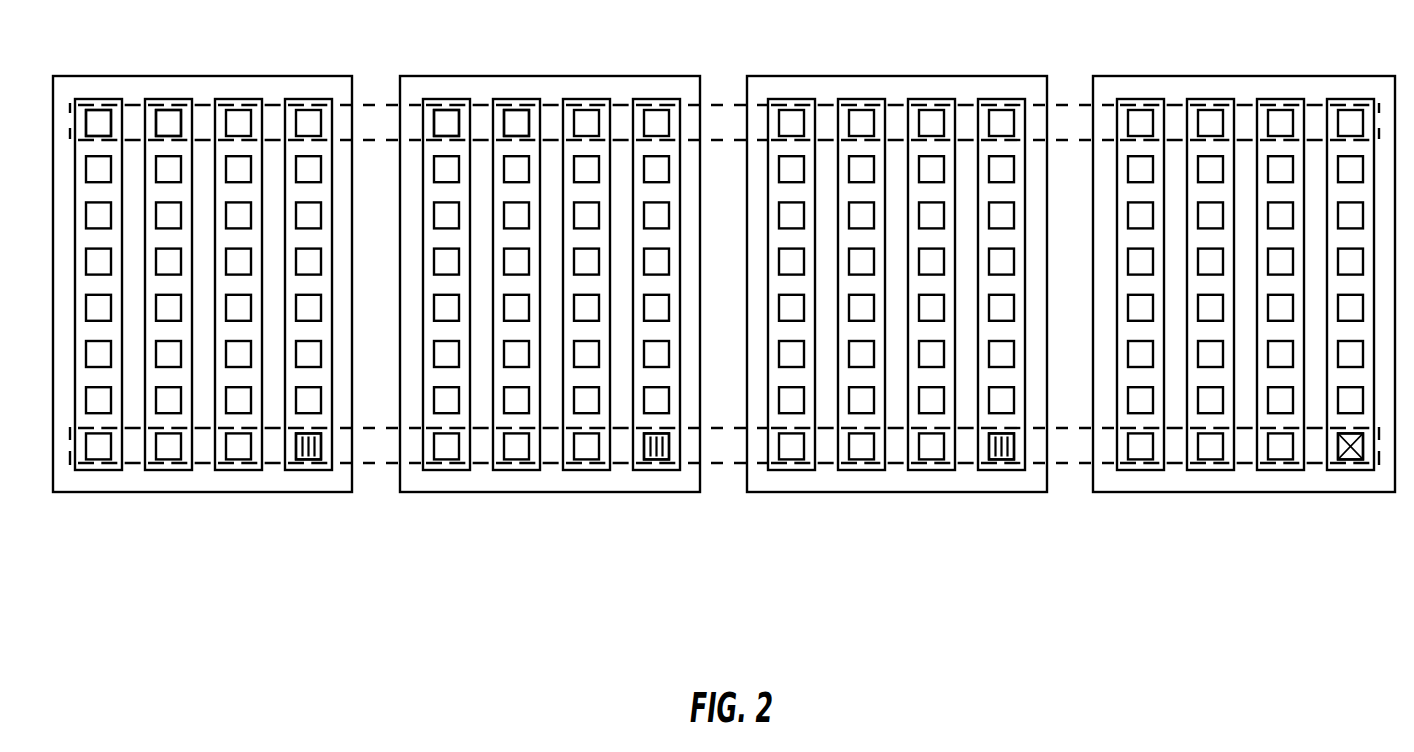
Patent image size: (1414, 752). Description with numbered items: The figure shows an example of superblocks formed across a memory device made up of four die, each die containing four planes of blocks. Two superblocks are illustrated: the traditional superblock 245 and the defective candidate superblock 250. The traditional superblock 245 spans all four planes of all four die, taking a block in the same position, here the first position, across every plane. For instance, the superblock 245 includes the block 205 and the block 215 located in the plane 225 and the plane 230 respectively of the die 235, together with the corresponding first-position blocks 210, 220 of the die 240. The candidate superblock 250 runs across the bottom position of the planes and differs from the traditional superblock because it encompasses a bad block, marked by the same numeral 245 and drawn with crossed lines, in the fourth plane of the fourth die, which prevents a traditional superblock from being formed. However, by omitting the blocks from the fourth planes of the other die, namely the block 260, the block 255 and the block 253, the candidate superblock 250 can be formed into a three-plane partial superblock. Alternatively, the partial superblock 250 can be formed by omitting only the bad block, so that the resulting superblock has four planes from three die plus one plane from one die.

The block 205 is at (100, 108).
The block 215 is at (170, 108).
The traditional superblock 245 is at (380, 107).
The block 210 is at (445, 108).
The block 220 is at (512, 108).
The plane 225 is at (98, 470).
The plane 230 is at (168, 470).
The die 235 is at (258, 492).
The block 260 is at (307, 457).
The candidate superblock 250 is at (380, 463).
The die 240 is at (550, 492).
The block 255 is at (653, 457).
The block 253 is at (1002, 457).